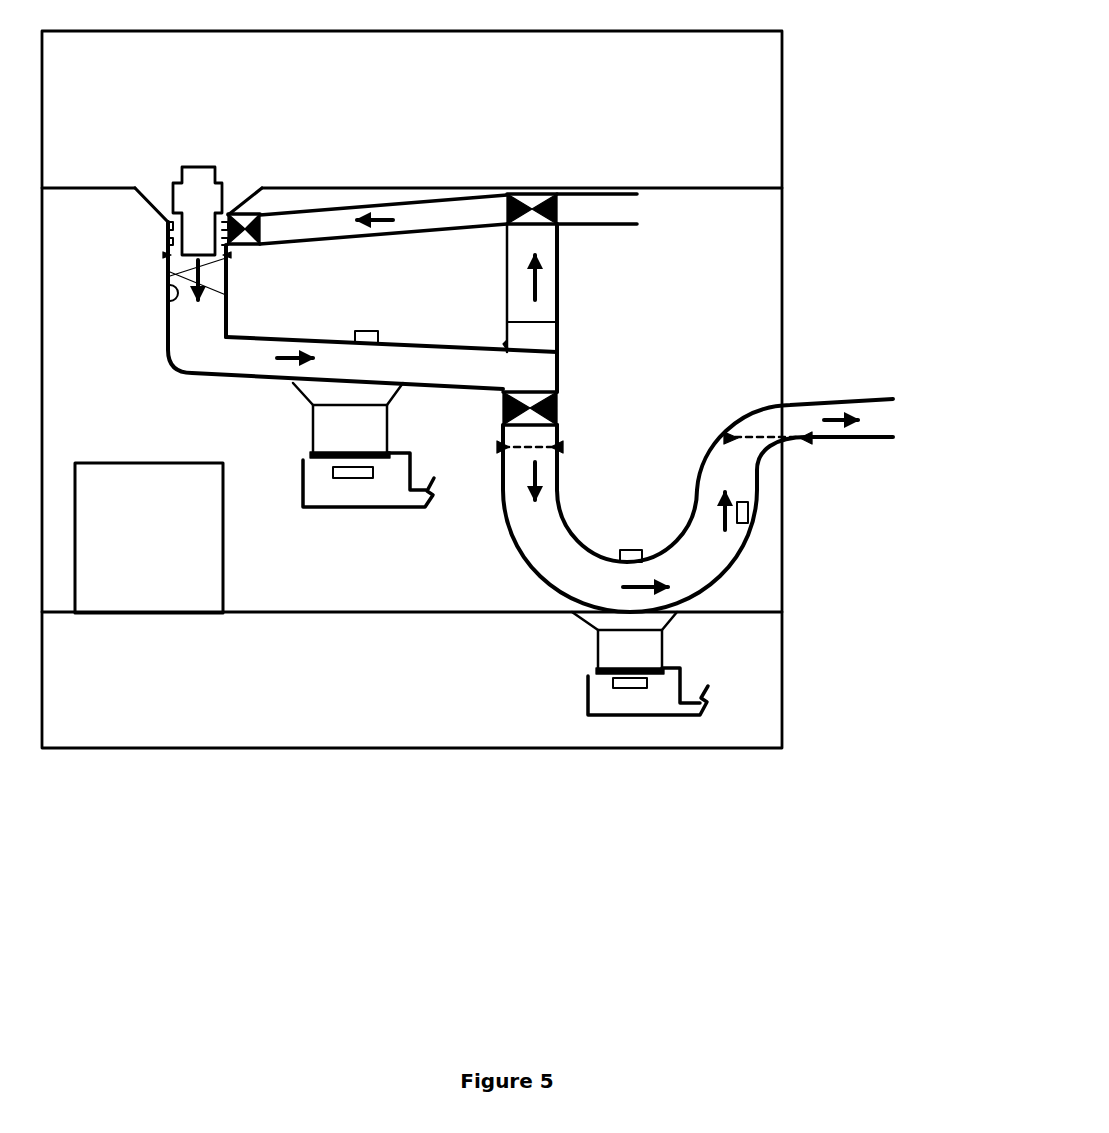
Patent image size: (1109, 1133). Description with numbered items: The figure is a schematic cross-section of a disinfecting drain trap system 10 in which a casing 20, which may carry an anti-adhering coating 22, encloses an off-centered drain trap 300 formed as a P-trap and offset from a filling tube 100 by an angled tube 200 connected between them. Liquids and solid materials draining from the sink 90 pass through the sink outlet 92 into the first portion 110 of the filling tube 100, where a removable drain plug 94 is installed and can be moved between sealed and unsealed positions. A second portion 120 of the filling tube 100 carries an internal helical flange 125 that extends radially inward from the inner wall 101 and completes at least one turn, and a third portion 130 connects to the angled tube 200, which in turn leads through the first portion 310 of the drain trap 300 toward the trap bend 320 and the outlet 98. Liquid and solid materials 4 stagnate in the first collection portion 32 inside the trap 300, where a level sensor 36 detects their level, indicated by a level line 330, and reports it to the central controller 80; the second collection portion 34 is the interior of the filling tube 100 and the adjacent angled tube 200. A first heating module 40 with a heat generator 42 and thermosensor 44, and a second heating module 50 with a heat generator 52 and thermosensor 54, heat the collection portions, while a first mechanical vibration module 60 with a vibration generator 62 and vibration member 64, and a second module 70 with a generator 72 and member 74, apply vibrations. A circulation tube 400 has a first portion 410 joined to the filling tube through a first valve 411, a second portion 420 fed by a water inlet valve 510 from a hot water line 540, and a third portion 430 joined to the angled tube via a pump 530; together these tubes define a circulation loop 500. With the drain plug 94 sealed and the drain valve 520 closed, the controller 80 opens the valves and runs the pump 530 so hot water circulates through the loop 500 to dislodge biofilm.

The liquid and solid materials 4 is at (717, 478).
The disinfecting drain trap system 10 is at (504, 457).
The casing 20 is at (798, 299).
The anti-adhering coating 22 is at (782, 356).
The first collection portion 32 is at (654, 531).
The second collection portion 34 is at (343, 366).
The level sensor 36 is at (750, 513).
The first heating module 40 is at (652, 555).
The first heat generator 42 is at (520, 590).
The thermosensor 44 is at (620, 552).
The second heating module 50 is at (398, 340).
The second heat generator 52 is at (222, 374).
The thermosensor 54 is at (352, 335).
The first mechanical vibration module 60 is at (611, 707).
The vibration generator 62 is at (635, 683).
The vibration member 64 is at (607, 650).
The second mechanical vibration module 70 is at (344, 475).
The vibration generator 72 is at (347, 473).
The vibration member 74 is at (323, 440).
The central controller 80 is at (90, 455).
The sink 90 is at (798, 120).
The inlet opening 92 is at (140, 182).
The drain plug 94 is at (148, 187).
The outlet 98 is at (877, 416).
The filling tube 100 is at (118, 272).
The inner wall 101 is at (169, 300).
The first portion 110 is at (160, 231).
The second portion 120 is at (250, 287).
The helical flange 125 is at (208, 268).
The third portion 130 is at (287, 305).
The angled tube 200 is at (445, 405).
The off-centered drain trap 300 is at (683, 373).
The first portion 310 is at (566, 432).
The bend 320 is at (718, 600).
The level line 330 is at (770, 473).
The circulation tube 400 is at (357, 182).
The first portion 410 is at (262, 203).
The first valve 411 is at (240, 217).
The second portion 420 is at (493, 232).
The third portion 430 is at (500, 333).
The circulation loop 500 is at (418, 235).
The water inlet valve 510 is at (560, 213).
The drain valve 520 is at (558, 400).
The pump 530 is at (535, 340).
The hot water line 540 is at (633, 232).